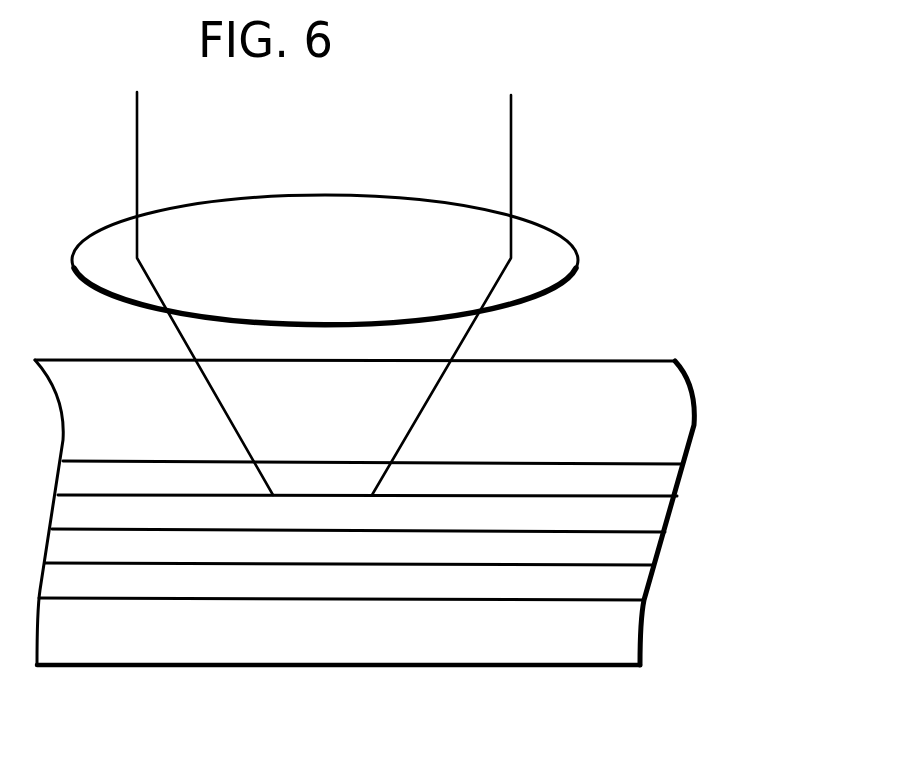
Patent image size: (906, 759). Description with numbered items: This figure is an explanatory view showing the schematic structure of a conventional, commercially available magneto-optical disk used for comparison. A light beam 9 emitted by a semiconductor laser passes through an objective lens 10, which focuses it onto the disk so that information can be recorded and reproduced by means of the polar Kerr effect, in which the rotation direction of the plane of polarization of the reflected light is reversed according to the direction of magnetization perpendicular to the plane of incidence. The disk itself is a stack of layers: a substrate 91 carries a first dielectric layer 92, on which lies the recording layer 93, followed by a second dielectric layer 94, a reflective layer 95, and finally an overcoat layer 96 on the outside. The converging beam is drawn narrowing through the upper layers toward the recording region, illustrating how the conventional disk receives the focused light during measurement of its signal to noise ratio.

The light beam 9 is at (511, 165).
The objective lens 10 is at (578, 262).
The substrate 91 is at (693, 400).
The first dielectric layer 92 is at (683, 478).
The recording layer 93 is at (677, 514).
The second dielectric layer 94 is at (663, 550).
The reflective layer 95 is at (650, 582).
The overcoat layer 96 is at (640, 633).